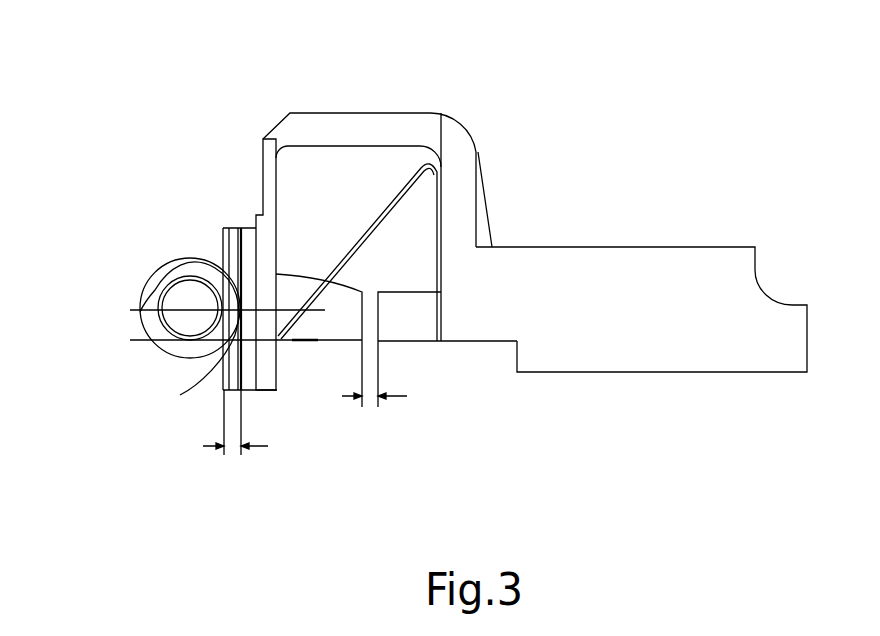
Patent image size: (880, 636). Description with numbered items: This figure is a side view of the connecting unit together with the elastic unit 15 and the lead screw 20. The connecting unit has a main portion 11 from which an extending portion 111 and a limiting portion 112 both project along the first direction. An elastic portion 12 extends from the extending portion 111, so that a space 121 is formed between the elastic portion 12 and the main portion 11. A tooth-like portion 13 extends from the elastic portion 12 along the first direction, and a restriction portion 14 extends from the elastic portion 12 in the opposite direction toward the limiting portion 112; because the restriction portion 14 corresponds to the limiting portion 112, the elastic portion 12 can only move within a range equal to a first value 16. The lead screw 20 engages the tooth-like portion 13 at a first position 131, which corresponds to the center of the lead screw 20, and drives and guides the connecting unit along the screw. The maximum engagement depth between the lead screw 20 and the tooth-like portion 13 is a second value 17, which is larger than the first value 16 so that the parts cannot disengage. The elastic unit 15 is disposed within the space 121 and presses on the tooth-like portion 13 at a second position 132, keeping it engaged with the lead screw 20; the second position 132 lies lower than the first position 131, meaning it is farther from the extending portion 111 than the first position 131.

The main portion 11 is at (607, 262).
The extending portion 111 is at (337, 123).
The limiting portion 112 is at (398, 335).
The elastic portion 12 is at (267, 160).
The space 121 is at (377, 153).
The tooth-like portion 13 is at (238, 227).
The first position 131 is at (180, 395).
The second position 132 is at (280, 352).
The restriction portion 14 is at (335, 327).
The elastic unit 15 is at (358, 237).
The first value 16 is at (374, 391).
The second value 17 is at (235, 441).
The lead screw 20 is at (175, 322).